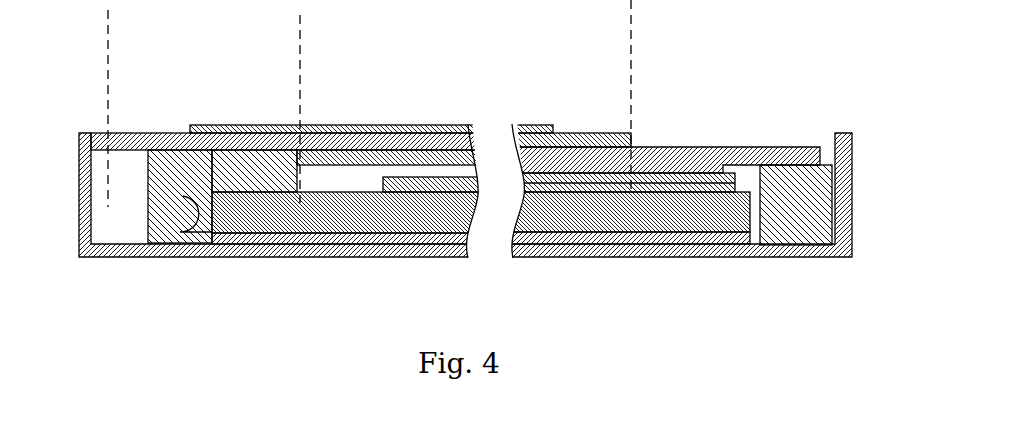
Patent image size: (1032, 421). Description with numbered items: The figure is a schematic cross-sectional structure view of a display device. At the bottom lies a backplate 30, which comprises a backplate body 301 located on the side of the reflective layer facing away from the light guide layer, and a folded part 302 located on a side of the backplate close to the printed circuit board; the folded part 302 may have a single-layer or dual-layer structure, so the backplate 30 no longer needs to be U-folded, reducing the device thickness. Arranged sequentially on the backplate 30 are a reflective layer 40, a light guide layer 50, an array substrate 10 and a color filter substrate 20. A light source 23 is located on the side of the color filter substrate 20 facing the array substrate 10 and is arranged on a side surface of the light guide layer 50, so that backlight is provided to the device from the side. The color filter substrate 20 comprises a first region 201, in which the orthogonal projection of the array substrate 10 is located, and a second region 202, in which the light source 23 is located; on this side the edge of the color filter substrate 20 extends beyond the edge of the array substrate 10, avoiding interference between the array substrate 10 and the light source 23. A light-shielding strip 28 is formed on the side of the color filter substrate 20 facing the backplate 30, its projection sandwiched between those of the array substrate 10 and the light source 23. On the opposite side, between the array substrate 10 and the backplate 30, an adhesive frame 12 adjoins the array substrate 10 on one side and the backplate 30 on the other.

The array substrate 10 is at (270, 127).
The adhesive frame 12 is at (803, 237).
The color filter substrate 20 is at (235, 170).
The light source 23 is at (170, 180).
The light-shielding strip 28 is at (196, 228).
The backplate 30 is at (102, 255).
The reflective layer 40 is at (251, 215).
The light guide layer 50 is at (285, 238).
The first region 201 is at (353, 61).
The second region 202 is at (258, 61).
The backplate body 301 is at (571, 294).
The folded part 302 is at (913, 193).